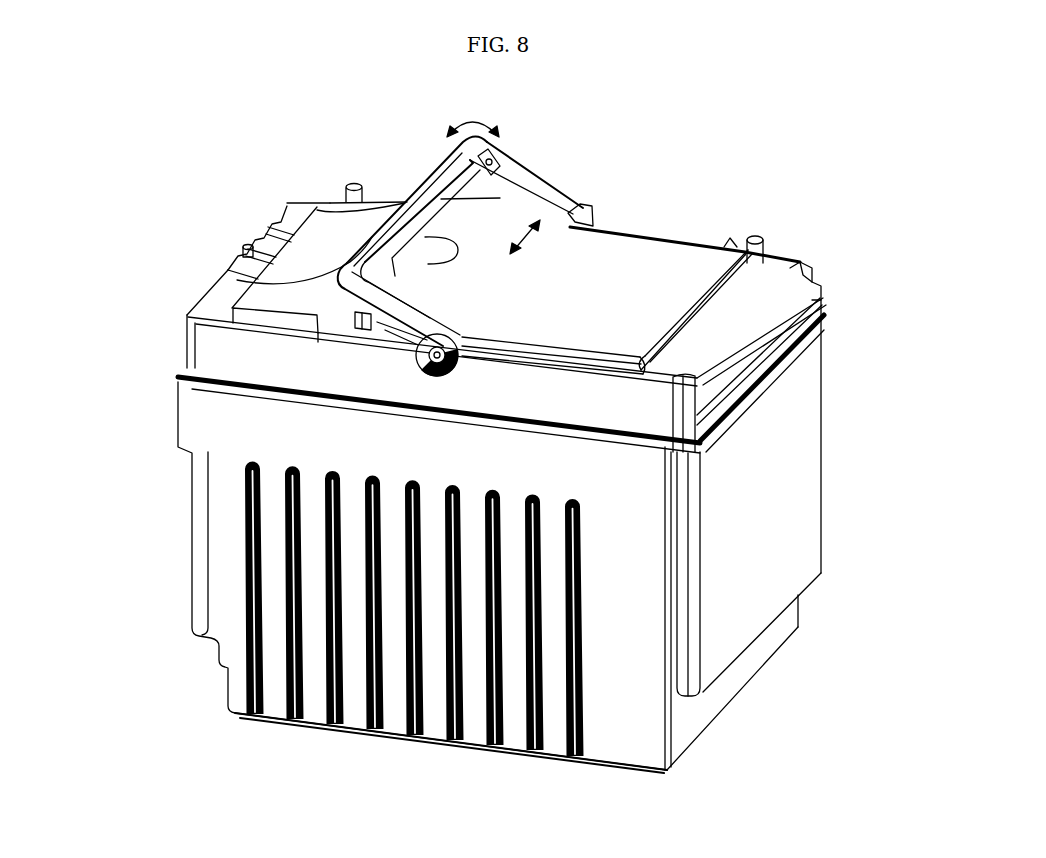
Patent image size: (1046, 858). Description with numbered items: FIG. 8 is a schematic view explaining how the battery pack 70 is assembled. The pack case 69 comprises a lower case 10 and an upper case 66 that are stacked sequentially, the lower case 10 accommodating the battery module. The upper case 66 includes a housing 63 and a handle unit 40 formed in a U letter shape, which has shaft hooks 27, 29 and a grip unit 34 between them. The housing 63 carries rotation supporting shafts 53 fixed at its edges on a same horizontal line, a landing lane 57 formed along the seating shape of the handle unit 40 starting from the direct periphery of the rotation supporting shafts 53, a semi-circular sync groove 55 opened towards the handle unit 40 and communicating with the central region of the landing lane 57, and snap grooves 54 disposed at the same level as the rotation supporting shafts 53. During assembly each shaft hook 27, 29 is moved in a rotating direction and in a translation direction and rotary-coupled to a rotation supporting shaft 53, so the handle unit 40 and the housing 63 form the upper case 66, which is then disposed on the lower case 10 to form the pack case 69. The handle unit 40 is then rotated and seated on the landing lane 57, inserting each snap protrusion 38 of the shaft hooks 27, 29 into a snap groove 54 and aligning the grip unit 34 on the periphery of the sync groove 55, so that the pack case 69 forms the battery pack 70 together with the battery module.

The lower case 10 is at (810, 354).
The shaft hook 27 is at (540, 189).
The shaft hook 29 is at (424, 316).
The grip unit 34 is at (445, 187).
The snap protrusion 38 is at (498, 168).
The handle unit 40 is at (278, 220).
The rotation supporting shaft 53 is at (470, 331).
The snap groove 54 is at (373, 325).
The sync groove 55 is at (235, 279).
The landing lane 57 is at (417, 352).
The housing 63 is at (649, 250).
The upper case 66 is at (824, 293).
The pack case 69 is at (895, 275).
The battery pack 70 is at (136, 563).